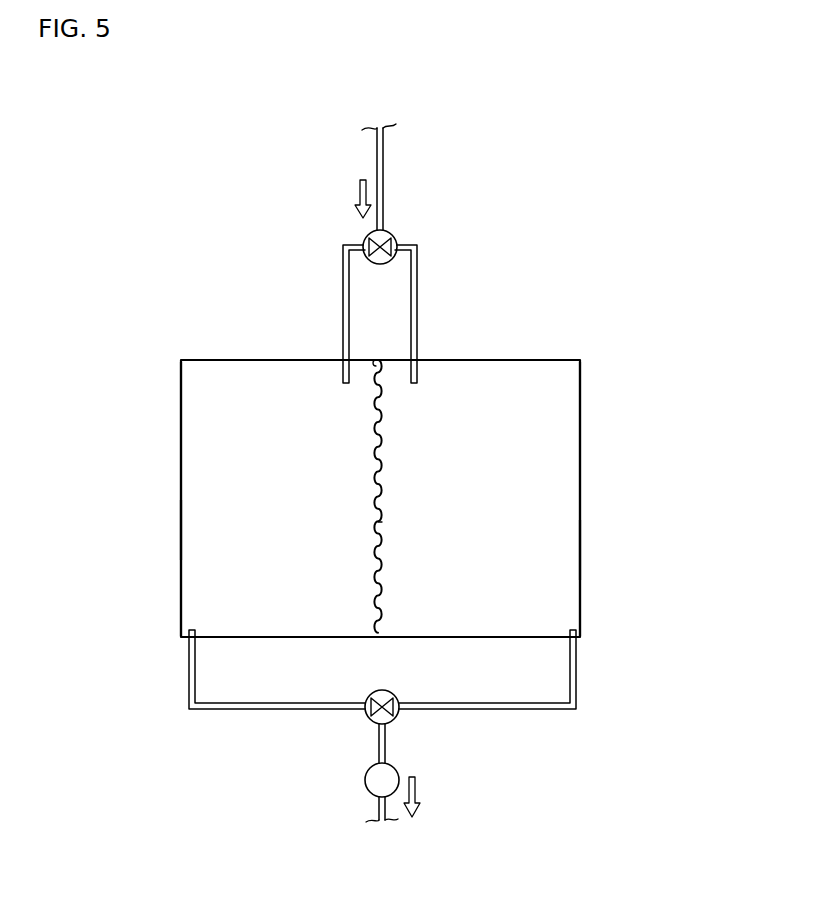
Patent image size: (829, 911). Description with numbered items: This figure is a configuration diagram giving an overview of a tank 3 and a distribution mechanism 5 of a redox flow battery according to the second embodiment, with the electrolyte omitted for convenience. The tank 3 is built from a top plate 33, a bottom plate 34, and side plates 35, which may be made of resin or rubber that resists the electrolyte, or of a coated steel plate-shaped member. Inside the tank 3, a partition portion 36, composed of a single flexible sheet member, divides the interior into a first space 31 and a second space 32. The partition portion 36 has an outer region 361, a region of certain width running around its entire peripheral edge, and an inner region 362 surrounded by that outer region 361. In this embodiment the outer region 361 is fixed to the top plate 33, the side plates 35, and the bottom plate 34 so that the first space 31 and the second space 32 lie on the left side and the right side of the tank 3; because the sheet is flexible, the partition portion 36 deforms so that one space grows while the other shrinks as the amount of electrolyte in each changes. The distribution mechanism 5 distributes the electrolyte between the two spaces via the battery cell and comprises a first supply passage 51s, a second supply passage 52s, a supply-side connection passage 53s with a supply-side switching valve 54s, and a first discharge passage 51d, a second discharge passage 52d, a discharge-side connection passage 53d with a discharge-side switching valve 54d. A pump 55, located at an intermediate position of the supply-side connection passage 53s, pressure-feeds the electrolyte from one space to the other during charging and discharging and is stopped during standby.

The tank 3 is at (596, 356).
The distribution mechanism 5 is at (495, 725).
The first space 31 is at (560, 418).
The second space 32 is at (202, 430).
The top plate 33 is at (489, 360).
The bottom plate 34 is at (302, 638).
The side plates 35 is at (181, 526).
The partition portion 36 is at (380, 492).
The outer region 361 is at (378, 368).
The inner region 362 is at (382, 522).
The first discharge passage 51d is at (417, 273).
The second discharge passage 52d is at (343, 295).
The discharge-side connection passage 53d is at (377, 166).
The discharge-side switching valve 54d is at (365, 238).
The first supply passage 51s is at (577, 652).
The second supply passage 52s is at (189, 650).
The supply-side connection passage 53s is at (378, 742).
The supply-side switching valve 54s is at (394, 716).
The pump 55 is at (367, 778).